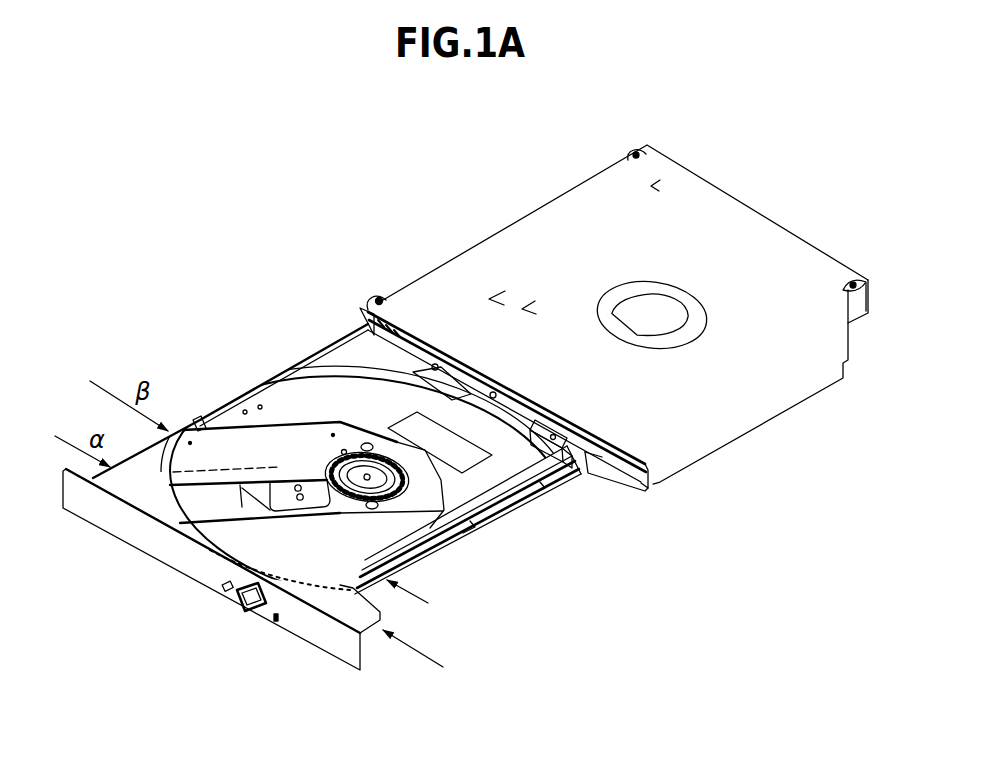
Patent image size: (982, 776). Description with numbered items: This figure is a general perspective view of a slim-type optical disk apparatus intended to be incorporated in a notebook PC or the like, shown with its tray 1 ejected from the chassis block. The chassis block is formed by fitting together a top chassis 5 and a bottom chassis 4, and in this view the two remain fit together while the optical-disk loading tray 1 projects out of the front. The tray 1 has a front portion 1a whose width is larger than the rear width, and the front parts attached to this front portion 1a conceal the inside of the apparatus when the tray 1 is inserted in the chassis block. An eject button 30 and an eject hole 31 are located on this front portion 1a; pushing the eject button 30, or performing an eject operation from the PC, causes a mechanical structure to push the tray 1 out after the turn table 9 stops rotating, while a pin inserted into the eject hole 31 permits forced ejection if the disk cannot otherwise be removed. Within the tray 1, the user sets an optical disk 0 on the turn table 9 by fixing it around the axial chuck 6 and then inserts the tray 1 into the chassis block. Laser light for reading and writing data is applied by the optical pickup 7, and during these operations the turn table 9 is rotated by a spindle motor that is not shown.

The optical disk 0 is at (401, 255).
The tray 1 is at (507, 474).
The front portion 1a is at (347, 622).
The bottom chassis 4 is at (612, 476).
The top chassis 5 is at (735, 414).
The axial chuck 6 is at (423, 521).
The optical pickup 7 is at (293, 488).
The turn table 9 is at (385, 487).
The eject button 30 is at (250, 610).
The eject hole 31 is at (277, 620).